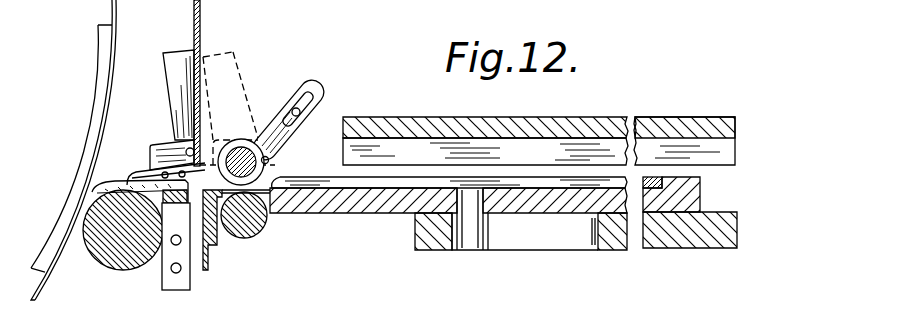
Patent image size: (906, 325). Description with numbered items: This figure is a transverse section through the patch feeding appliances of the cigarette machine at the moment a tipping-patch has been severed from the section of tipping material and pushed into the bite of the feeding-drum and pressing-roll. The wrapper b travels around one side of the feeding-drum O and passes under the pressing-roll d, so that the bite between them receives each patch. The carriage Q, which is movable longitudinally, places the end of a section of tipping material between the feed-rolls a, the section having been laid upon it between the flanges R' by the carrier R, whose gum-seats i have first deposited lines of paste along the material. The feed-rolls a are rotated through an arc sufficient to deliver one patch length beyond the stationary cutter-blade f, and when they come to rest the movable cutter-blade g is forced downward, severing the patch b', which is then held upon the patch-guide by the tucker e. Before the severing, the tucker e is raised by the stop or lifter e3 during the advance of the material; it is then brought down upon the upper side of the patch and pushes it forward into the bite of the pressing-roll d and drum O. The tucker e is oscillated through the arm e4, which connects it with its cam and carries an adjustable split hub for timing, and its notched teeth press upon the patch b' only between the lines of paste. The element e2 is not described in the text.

The wrapper b is at (73, 155).
The patch b' is at (112, 194).
The feeding-drum O is at (80, 172).
The movable cutter-blade g is at (194, 15).
The arm e4 is at (249, 66).
The block on lever e2 is at (155, 143).
The tucker e is at (128, 174).
The stop or lifter e3 is at (266, 160).
The carrier R is at (539, 128).
The gum-seats i is at (535, 151).
The carriage Q is at (373, 214).
The flanges R' is at (694, 210).
The pressing-roll d is at (120, 272).
The stationary cutter-blade f is at (207, 268).
The feed-rolls a is at (245, 238).